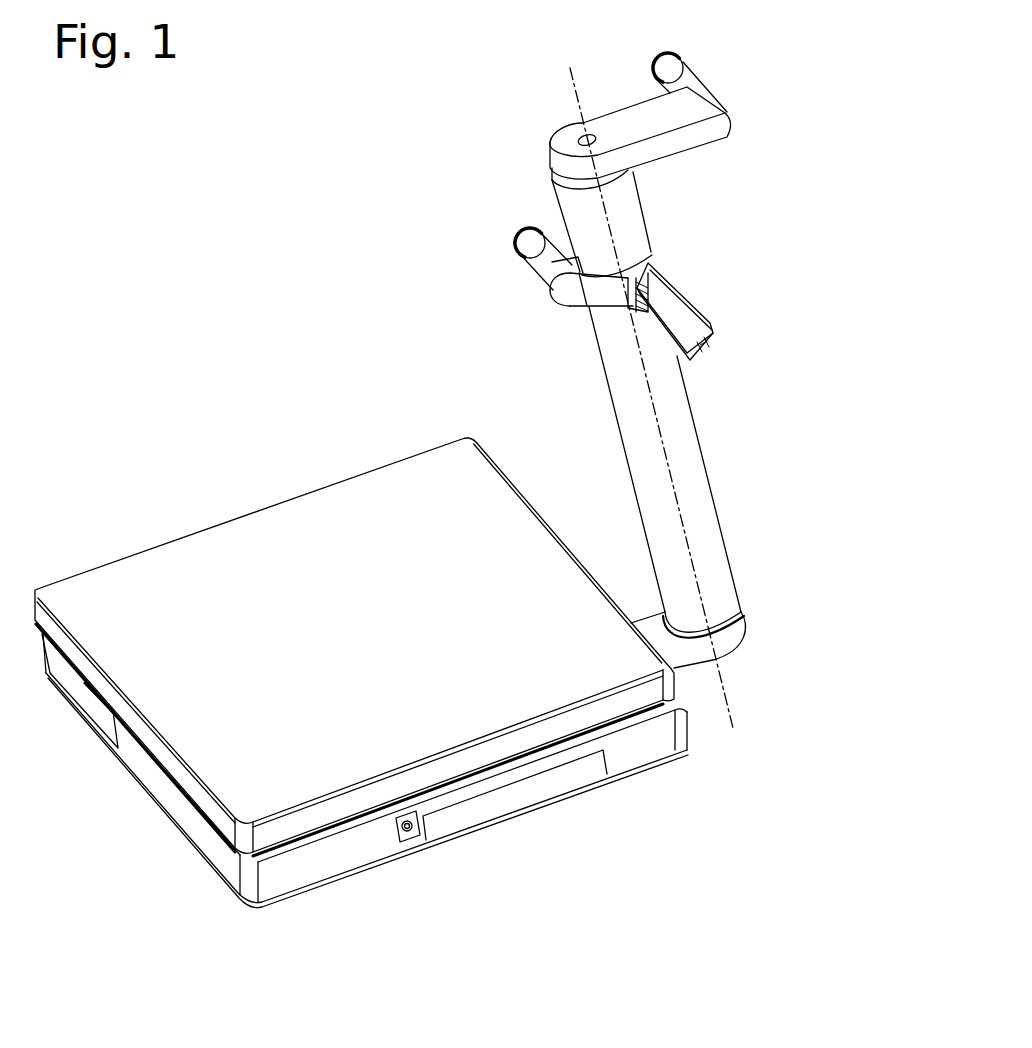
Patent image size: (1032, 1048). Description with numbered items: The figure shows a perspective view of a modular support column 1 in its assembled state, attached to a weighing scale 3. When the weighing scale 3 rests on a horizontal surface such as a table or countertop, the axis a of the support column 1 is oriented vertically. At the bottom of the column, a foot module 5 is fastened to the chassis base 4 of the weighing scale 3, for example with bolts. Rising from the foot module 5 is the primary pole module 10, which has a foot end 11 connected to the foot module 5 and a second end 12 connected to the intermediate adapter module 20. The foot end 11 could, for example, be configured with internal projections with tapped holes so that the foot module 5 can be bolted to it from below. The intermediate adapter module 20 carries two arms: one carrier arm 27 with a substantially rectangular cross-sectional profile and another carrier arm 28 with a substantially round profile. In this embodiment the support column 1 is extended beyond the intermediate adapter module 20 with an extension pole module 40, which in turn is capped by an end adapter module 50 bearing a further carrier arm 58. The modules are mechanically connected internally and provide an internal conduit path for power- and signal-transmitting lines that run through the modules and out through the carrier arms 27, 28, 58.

The modular support column 1 is at (762, 441).
The weighing scale 3 is at (214, 466).
The chassis base 4 is at (337, 858).
The foot module 5 is at (692, 653).
The primary pole module 10 is at (705, 502).
The foot end 11 is at (737, 613).
The second end 12 is at (610, 303).
The intermediate adapter module 20 is at (600, 286).
The carrier arm 27 is at (678, 303).
The carrier arm 28 is at (529, 250).
The extension pole module 40 is at (622, 210).
The end adapter module 50 is at (665, 135).
The carrier arm 58 is at (685, 62).
The axis a is at (655, 401).